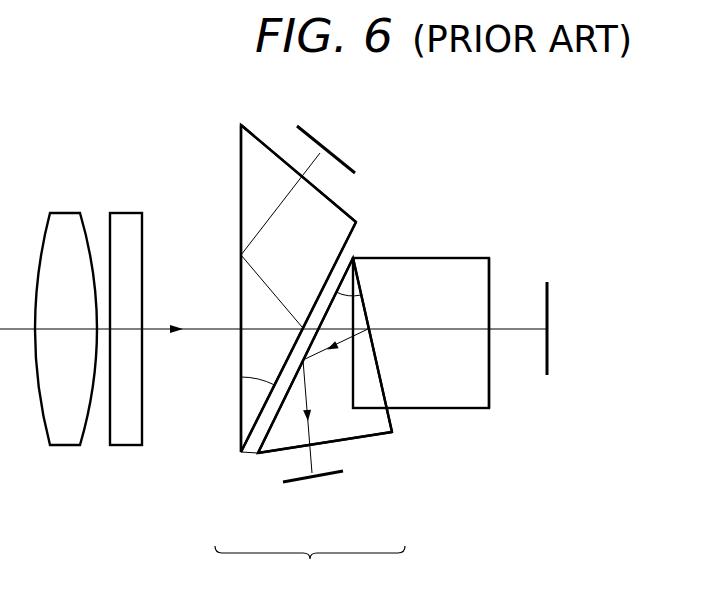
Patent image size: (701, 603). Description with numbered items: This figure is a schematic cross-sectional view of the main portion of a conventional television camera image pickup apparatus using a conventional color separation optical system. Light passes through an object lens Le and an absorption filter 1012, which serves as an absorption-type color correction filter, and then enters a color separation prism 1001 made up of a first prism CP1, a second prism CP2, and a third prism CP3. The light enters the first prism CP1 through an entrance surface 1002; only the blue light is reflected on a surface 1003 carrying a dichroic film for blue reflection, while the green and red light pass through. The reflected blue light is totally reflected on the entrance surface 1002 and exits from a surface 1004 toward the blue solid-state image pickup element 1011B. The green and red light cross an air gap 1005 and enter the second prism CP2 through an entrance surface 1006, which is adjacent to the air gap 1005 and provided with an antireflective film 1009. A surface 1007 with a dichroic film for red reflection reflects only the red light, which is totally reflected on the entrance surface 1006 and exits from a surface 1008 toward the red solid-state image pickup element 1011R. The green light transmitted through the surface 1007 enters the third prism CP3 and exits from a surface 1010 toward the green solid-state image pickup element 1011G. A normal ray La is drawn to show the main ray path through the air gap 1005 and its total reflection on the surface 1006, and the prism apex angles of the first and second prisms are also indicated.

The color separation prism 1001 is at (310, 567).
The entrance surface 1002 is at (240, 432).
The surface provided with a dichroic film for blue reflection 1003 is at (264, 402).
The surface 1004 is at (336, 203).
The air gap 1005 is at (345, 262).
The entrance surface 1006 is at (280, 420).
The surface provided with a dichroic film for red reflection 1007 is at (376, 380).
The surface 1008 is at (360, 440).
The antireflective film 1009 is at (256, 440).
The surface 1010 is at (489, 277).
The blue solid-state image pickup element 1011B is at (372, 139).
The green solid-state image pickup element 1011G is at (548, 297).
The red solid-state image pickup element 1011R is at (320, 478).
The absorption filter 1012 is at (128, 213).
The object lens Le is at (60, 213).
The normal ray La is at (318, 457).
The first prism CP1 is at (257, 150).
The second prism CP2 is at (382, 420).
The third prism CP3 is at (478, 373).